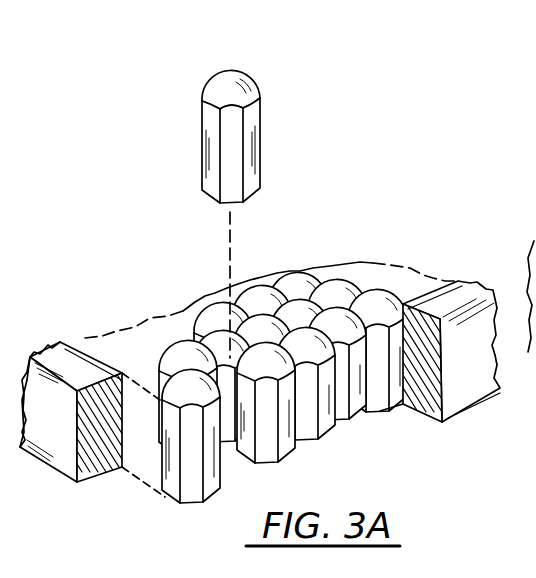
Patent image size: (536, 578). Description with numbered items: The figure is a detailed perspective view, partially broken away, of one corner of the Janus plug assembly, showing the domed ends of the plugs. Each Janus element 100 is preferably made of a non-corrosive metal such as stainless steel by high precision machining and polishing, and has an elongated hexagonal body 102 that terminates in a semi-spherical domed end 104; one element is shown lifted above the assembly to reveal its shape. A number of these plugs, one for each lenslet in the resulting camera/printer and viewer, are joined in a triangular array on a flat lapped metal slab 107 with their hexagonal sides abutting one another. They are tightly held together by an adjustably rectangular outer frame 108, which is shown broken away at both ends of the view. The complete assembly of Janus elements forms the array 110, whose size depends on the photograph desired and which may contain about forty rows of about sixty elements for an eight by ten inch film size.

The Janus element 100 is at (277, 138).
The elongated hexagonal body 102 is at (258, 176).
The semi-spherical domed end 104 is at (232, 84).
The flat lapped metal slab 107 is at (384, 465).
The adjustably rectangular outer frame 108 is at (94, 449).
The array 110 is at (378, 252).